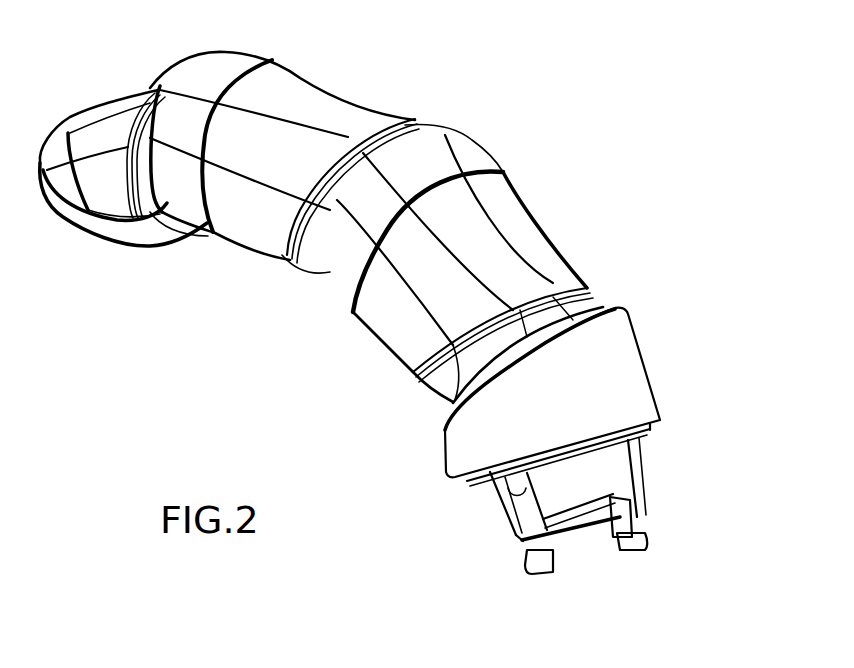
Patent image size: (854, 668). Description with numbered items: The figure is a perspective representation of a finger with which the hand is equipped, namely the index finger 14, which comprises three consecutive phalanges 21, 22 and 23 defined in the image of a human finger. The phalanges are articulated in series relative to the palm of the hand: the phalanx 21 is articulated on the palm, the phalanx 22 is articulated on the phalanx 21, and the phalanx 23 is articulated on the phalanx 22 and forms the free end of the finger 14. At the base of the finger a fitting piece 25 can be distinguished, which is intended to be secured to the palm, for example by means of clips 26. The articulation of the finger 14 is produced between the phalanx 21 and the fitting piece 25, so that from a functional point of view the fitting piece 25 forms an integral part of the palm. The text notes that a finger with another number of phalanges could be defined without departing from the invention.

The index finger 14 is at (239, 338).
The phalanx 21 is at (499, 237).
The phalanx 22 is at (305, 99).
The phalanx 23 is at (105, 126).
The fitting piece 25 is at (620, 375).
The clips 26 is at (633, 550).